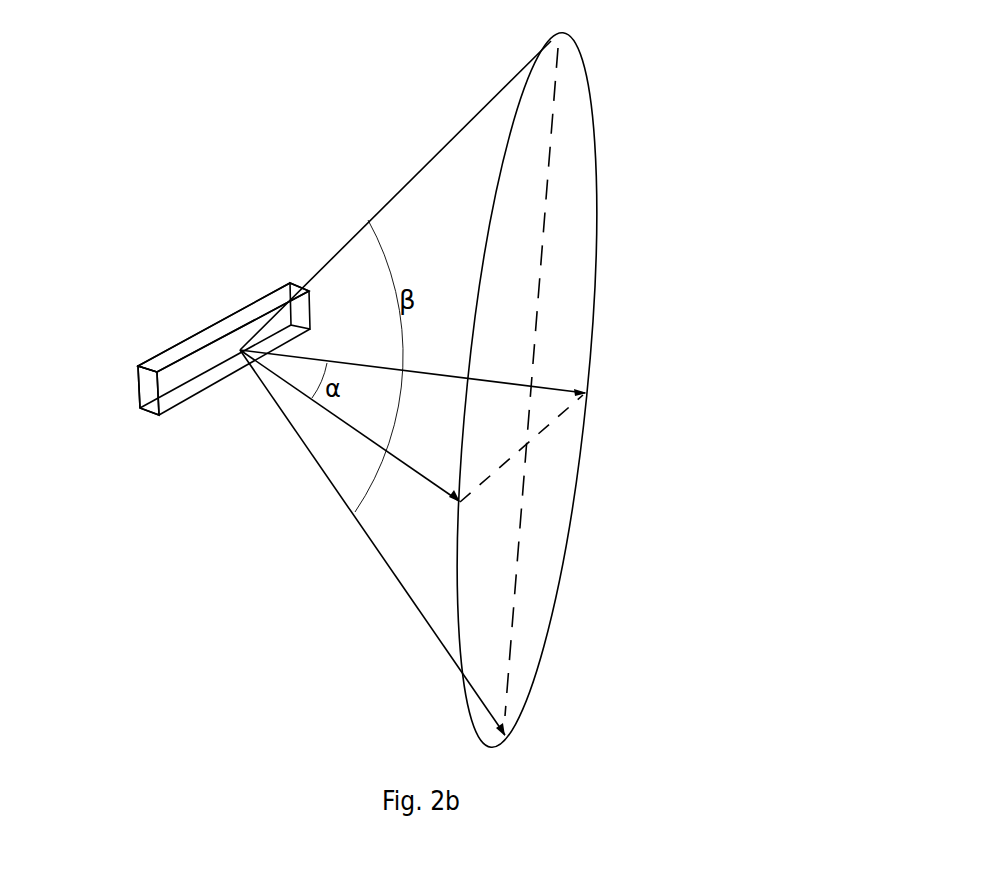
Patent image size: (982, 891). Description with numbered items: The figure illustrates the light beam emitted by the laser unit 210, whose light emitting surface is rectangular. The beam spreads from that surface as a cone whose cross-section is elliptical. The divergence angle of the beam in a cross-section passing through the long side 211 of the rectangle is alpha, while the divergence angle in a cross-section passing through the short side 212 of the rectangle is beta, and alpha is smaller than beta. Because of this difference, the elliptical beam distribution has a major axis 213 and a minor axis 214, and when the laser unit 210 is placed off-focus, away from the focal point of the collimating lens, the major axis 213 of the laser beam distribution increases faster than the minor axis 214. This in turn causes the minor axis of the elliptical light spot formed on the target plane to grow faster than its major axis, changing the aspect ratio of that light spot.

The laser unit 210 is at (160, 315).
The long side 211 is at (212, 338).
The short side 212 is at (157, 390).
The major axis 213 is at (543, 273).
The minor axis 214 is at (567, 410).